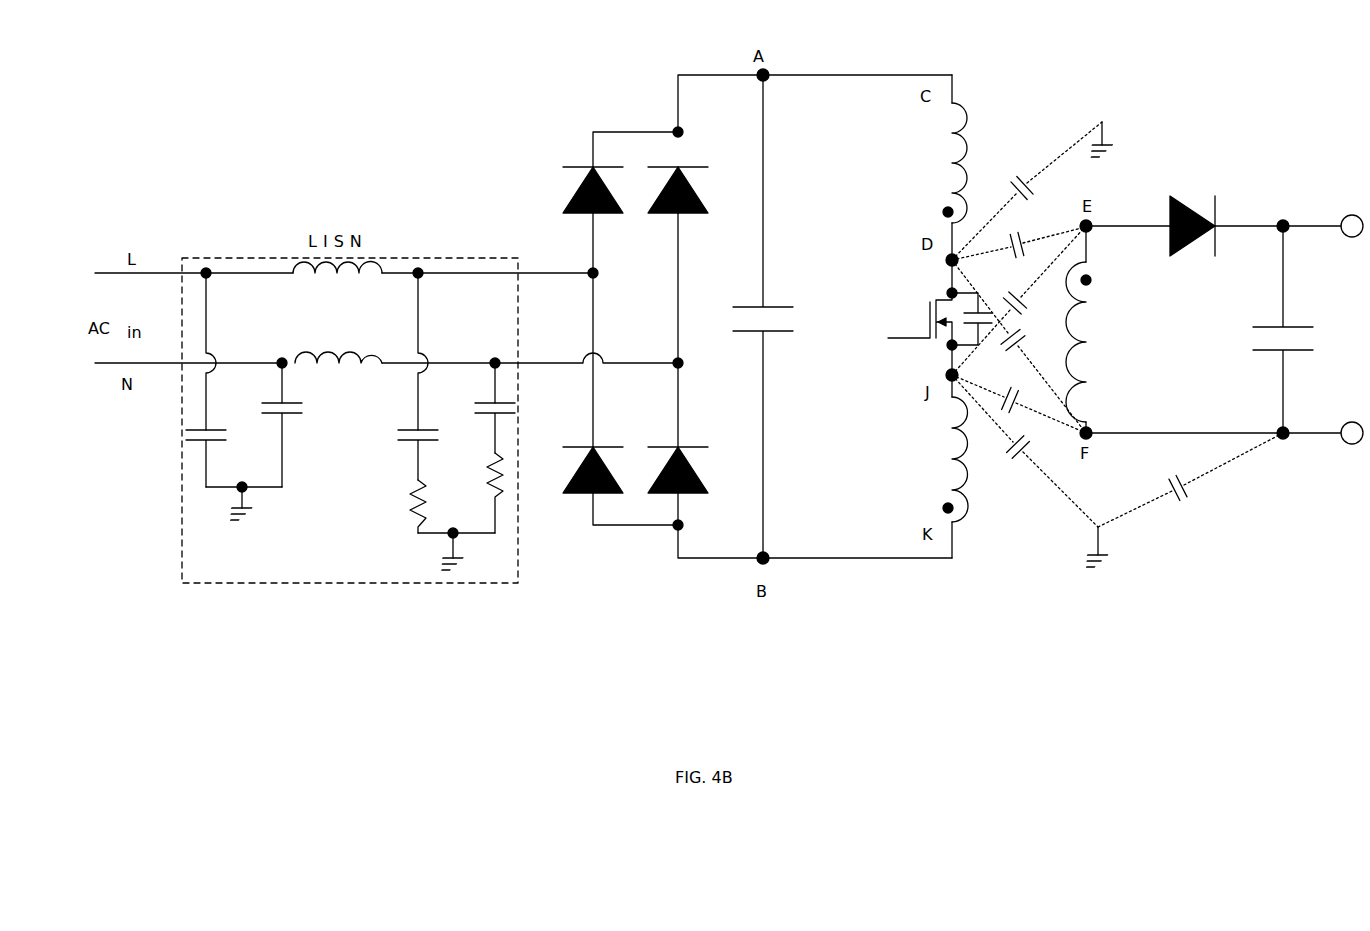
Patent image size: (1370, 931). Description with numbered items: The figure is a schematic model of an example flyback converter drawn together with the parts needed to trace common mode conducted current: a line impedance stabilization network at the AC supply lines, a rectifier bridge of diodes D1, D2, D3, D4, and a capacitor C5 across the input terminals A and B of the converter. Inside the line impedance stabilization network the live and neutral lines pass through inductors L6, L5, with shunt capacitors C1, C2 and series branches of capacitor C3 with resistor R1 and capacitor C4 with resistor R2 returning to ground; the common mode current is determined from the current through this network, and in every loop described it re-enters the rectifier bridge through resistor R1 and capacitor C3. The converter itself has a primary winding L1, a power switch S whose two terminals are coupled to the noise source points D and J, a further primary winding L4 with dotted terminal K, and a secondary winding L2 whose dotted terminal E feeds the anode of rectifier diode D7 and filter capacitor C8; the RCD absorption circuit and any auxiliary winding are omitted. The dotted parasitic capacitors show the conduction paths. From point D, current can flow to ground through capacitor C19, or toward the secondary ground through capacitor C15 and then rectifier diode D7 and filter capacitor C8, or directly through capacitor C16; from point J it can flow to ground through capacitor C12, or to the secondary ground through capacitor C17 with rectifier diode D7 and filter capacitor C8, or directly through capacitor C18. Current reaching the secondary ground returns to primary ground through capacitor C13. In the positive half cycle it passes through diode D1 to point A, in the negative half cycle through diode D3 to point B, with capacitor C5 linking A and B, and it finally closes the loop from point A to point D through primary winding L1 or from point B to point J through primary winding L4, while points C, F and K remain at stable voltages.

The LISN inductor L6 is at (337, 288).
The LISN inductor L5 is at (338, 350).
The LISN capacitor C1 is at (211, 458).
The LISN capacitor C2 is at (293, 441).
The capacitor C3 is at (409, 445).
The LISN capacitor C4 is at (487, 428).
The resistor R1 is at (402, 506).
The LISN resistor R2 is at (477, 493).
The diode D1 is at (576, 190).
The diode D2 is at (689, 190).
The diode D3 is at (581, 470).
The diode D4 is at (687, 470).
The capacitor C5 is at (745, 316).
The primary winding L1 is at (939, 163).
The power switch S is at (939, 319).
The primary winding L4 is at (941, 459).
The secondary winding L2 is at (1091, 342).
The rectifier diode D7 is at (1171, 226).
The filter capacitor C8 is at (1296, 329).
The capacitor C19 is at (1027, 191).
The capacitor C15 is at (1018, 237).
The capacitor C16 is at (1018, 301).
The capacitor C17 is at (1019, 346).
The capacitor C18 is at (1019, 404).
The capacitor C12 is at (1025, 451).
The capacitor C13 is at (1190, 480).